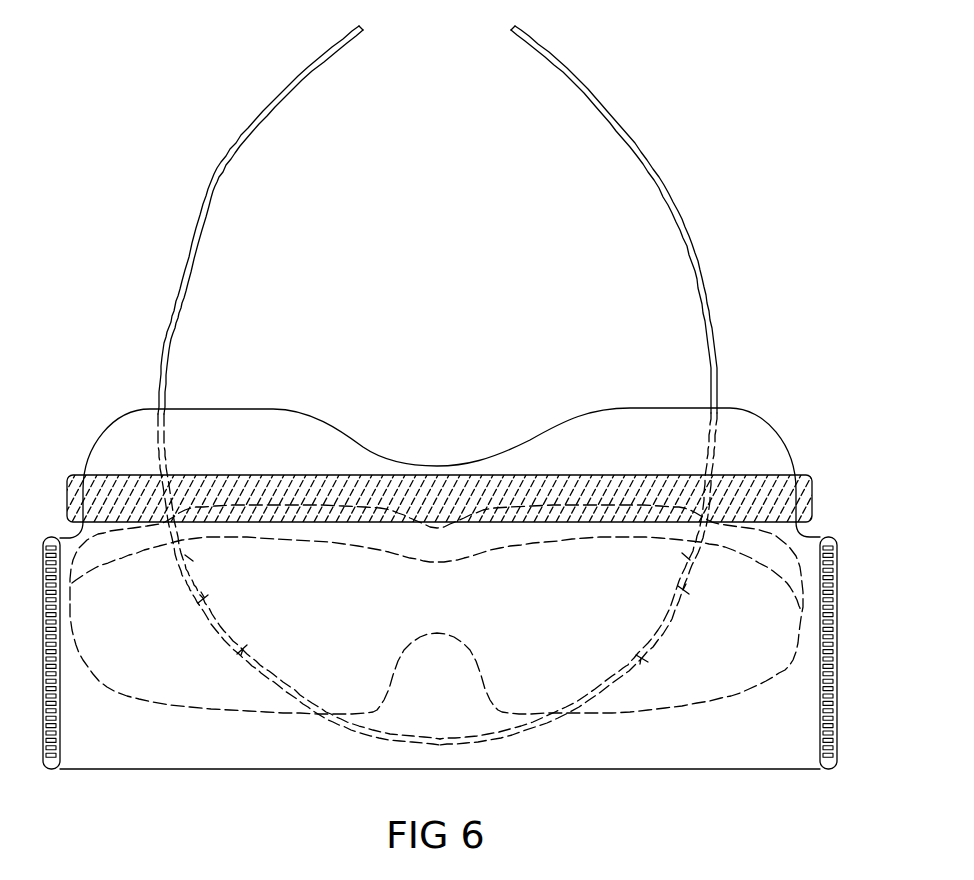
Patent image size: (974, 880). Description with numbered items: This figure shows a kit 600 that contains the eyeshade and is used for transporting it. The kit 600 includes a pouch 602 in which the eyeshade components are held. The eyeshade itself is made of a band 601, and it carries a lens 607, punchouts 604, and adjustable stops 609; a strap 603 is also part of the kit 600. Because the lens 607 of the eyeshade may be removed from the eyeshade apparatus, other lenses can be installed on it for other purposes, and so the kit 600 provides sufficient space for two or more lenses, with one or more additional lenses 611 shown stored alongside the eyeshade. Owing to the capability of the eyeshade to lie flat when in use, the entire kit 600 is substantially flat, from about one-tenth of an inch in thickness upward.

The kit 600 is at (858, 637).
The band 601 is at (180, 307).
The pouch 602 is at (762, 770).
The strap 603 is at (433, 475).
The punchouts 604 is at (187, 557).
The lens 607 is at (612, 708).
The adjustable stops 609 is at (220, 638).
The additional lenses 611 is at (795, 550).